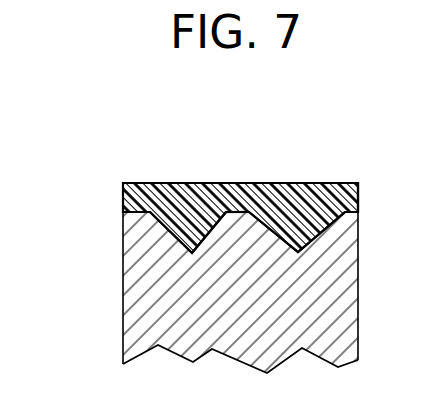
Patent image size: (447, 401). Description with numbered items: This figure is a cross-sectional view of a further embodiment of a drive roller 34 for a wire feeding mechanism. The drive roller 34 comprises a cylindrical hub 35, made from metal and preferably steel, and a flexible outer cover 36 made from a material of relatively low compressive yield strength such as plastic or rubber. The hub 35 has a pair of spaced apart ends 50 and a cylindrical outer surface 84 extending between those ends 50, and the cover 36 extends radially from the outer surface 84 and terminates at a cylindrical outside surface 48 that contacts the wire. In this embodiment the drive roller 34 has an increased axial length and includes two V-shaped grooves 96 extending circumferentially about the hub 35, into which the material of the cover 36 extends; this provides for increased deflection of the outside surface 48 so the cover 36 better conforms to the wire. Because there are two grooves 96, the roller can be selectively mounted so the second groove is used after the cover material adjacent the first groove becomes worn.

The drive roller 34 is at (122, 183).
The flexible outer cover 36 is at (361, 184).
The cylindrical outside surface 48 is at (180, 182).
The cylindrical outer surface 84 is at (244, 210).
The V-shaped groove 96 is at (171, 232).
The cylindrical hub 35 is at (360, 290).
The ends 50 is at (123, 323).